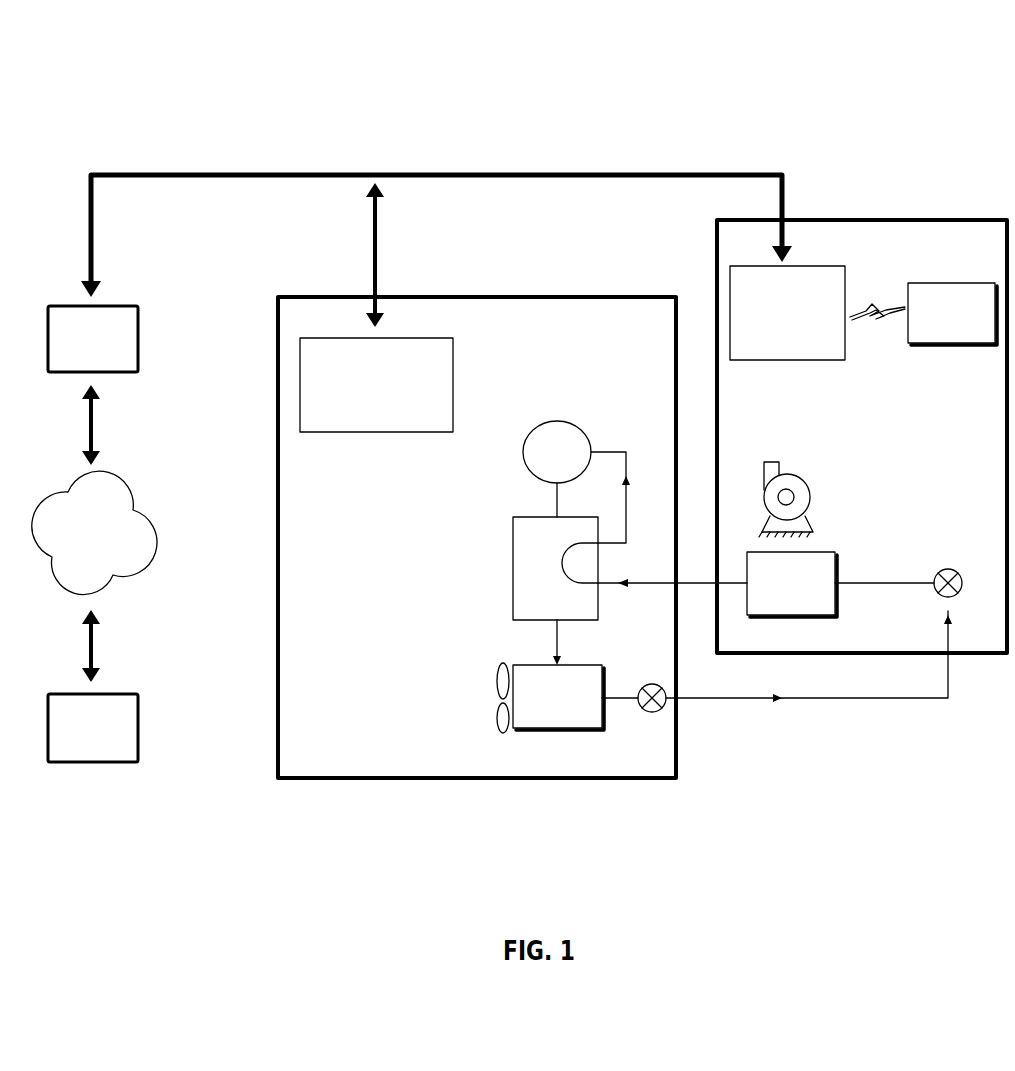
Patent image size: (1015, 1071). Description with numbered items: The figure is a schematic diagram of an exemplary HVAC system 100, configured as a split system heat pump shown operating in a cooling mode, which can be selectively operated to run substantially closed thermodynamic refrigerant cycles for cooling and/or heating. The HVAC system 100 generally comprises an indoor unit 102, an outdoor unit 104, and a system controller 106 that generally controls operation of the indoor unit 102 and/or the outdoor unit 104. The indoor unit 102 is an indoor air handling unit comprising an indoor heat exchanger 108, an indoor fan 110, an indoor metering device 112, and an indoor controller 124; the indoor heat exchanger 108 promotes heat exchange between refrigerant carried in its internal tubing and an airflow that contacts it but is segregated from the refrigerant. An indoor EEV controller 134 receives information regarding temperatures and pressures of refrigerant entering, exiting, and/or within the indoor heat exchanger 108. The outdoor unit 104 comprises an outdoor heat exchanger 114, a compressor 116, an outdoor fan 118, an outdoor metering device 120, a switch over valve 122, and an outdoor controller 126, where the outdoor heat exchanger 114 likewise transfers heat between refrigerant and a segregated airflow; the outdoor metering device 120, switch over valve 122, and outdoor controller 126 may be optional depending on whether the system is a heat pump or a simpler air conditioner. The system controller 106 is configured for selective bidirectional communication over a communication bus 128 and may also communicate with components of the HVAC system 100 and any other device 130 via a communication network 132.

The HVAC system 100 is at (783, 91).
The indoor unit 102 is at (897, 220).
The outdoor unit 104 is at (505, 297).
The system controller 106 is at (108, 354).
The indoor heat exchanger 108 is at (808, 598).
The indoor fan 110 is at (805, 480).
The indoor metering device 112 is at (945, 570).
The outdoor heat exchanger 114 is at (574, 712).
The compressor 116 is at (574, 467).
The outdoor fan 118 is at (496, 672).
The outdoor metering device 120 is at (658, 710).
The switch over valve 122 is at (513, 565).
The indoor controller 124 is at (804, 328).
The outdoor controller 126 is at (393, 400).
The communication bus 128 is at (472, 175).
The other device 130 is at (108, 743).
The communication network 132 is at (108, 550).
The indoor EEV controller 134 is at (968, 328).